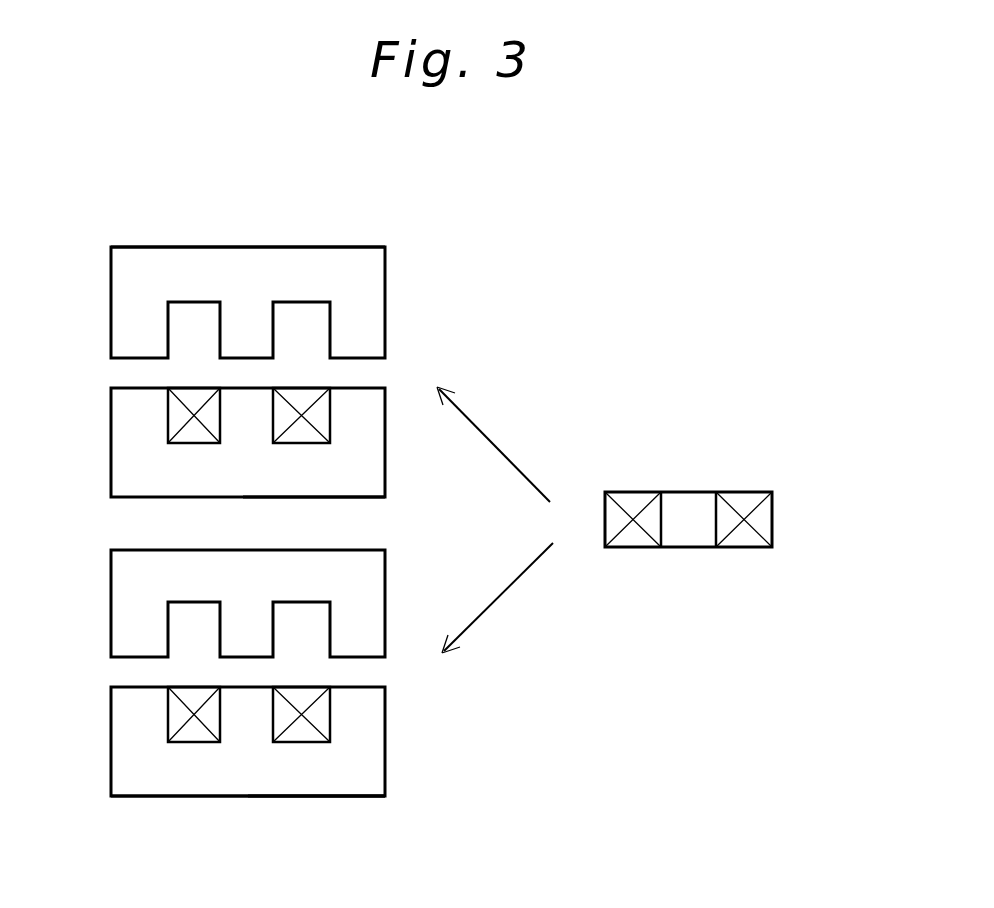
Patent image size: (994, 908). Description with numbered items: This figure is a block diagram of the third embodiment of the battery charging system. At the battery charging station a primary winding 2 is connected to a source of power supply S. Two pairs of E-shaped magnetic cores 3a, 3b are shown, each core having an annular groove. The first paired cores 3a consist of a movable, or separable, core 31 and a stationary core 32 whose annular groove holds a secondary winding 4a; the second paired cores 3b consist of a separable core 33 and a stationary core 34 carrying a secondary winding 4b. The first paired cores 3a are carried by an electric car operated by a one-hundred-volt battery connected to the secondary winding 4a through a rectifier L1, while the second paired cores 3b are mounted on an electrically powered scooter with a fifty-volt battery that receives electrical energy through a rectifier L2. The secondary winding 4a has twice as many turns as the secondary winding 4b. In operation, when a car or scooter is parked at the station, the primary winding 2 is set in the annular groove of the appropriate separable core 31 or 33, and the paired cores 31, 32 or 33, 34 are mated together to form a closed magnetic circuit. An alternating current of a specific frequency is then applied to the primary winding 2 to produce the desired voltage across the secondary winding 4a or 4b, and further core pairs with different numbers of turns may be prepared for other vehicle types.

The first paired cores 3a is at (165, 244).
The second paired cores 3b is at (170, 800).
The separable core 31 is at (122, 303).
The stationary core 32 is at (122, 446).
The separable core 33 is at (122, 606).
The stationary core 34 is at (120, 740).
The secondary winding 4a is at (317, 421).
The secondary winding 4b is at (322, 715).
The rectifier L1 is at (243, 497).
The rectifier L2 is at (248, 797).
The source of power supply S is at (742, 503).
The primary winding 2 is at (762, 528).